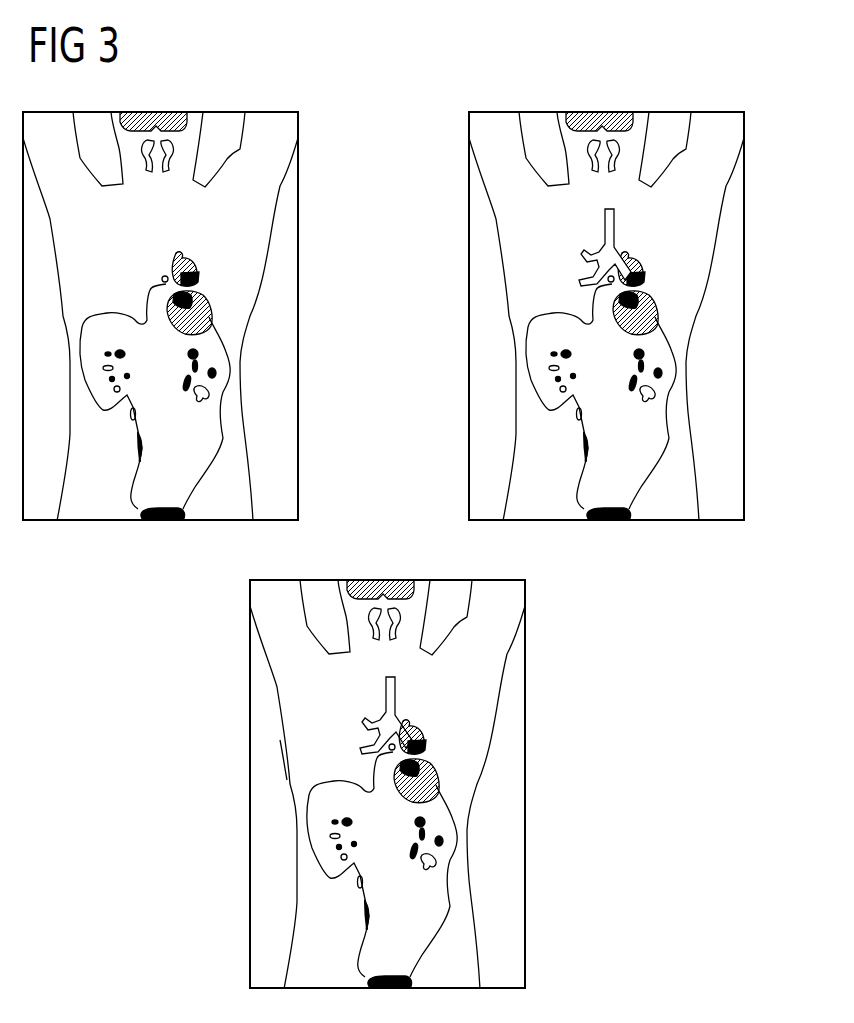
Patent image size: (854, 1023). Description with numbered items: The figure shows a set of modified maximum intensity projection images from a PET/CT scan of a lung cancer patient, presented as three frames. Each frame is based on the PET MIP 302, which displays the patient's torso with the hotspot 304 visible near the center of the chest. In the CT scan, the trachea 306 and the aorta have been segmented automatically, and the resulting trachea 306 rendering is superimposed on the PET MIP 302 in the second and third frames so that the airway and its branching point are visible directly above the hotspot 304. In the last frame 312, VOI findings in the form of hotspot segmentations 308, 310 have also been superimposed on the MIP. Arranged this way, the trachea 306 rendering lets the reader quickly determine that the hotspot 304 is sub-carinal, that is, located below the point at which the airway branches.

The PET MIP 302 is at (219, 116).
The hotspot 304 is at (344, 515).
The trachea 306 is at (577, 247).
The hotspot segmentation 308 is at (443, 700).
The hotspot segmentation 310 is at (460, 784).
The last frame 312 is at (227, 754).